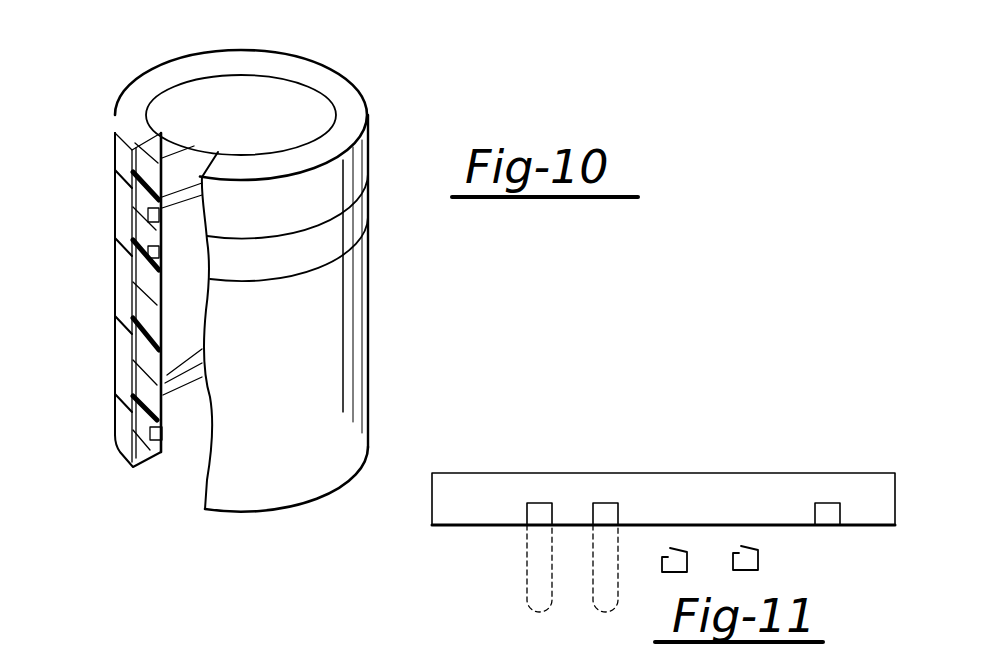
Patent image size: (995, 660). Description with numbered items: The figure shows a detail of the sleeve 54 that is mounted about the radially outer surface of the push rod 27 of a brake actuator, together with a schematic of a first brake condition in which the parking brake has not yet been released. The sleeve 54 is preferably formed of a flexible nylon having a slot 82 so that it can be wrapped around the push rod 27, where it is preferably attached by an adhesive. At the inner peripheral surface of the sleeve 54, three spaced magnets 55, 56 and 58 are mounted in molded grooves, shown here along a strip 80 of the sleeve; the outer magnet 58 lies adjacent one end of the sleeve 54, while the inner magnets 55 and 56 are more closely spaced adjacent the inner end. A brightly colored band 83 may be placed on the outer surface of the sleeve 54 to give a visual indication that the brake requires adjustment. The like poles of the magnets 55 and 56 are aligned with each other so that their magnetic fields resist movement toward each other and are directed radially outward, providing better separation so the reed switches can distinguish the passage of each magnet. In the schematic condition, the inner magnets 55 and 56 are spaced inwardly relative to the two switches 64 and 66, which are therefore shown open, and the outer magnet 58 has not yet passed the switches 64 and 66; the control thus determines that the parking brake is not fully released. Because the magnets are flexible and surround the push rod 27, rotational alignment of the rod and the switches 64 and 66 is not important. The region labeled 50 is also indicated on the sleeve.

In FIG. 11, the push rod 27 is at (752, 485).
In FIG. 10, the sensor element 50 is at (172, 200).
In FIG. 10, the sleeve 54 is at (333, 316).
In FIG. 10, the magnet 55 is at (160, 212).
In FIG. 11, the magnet 55 is at (527, 517).
In FIG. 11, the magnet 56 is at (620, 510).
In FIG. 10, the magnet 58 is at (153, 430).
In FIG. 11, the magnet 58 is at (833, 512).
In FIG. 11, the switch 64 is at (668, 573).
In FIG. 11, the switch 66 is at (758, 565).
In FIG. 10, the sensor strip 80 is at (150, 287).
In FIG. 10, the slot 82 is at (190, 97).
In FIG. 10, the brightly colored band 83 is at (120, 208).